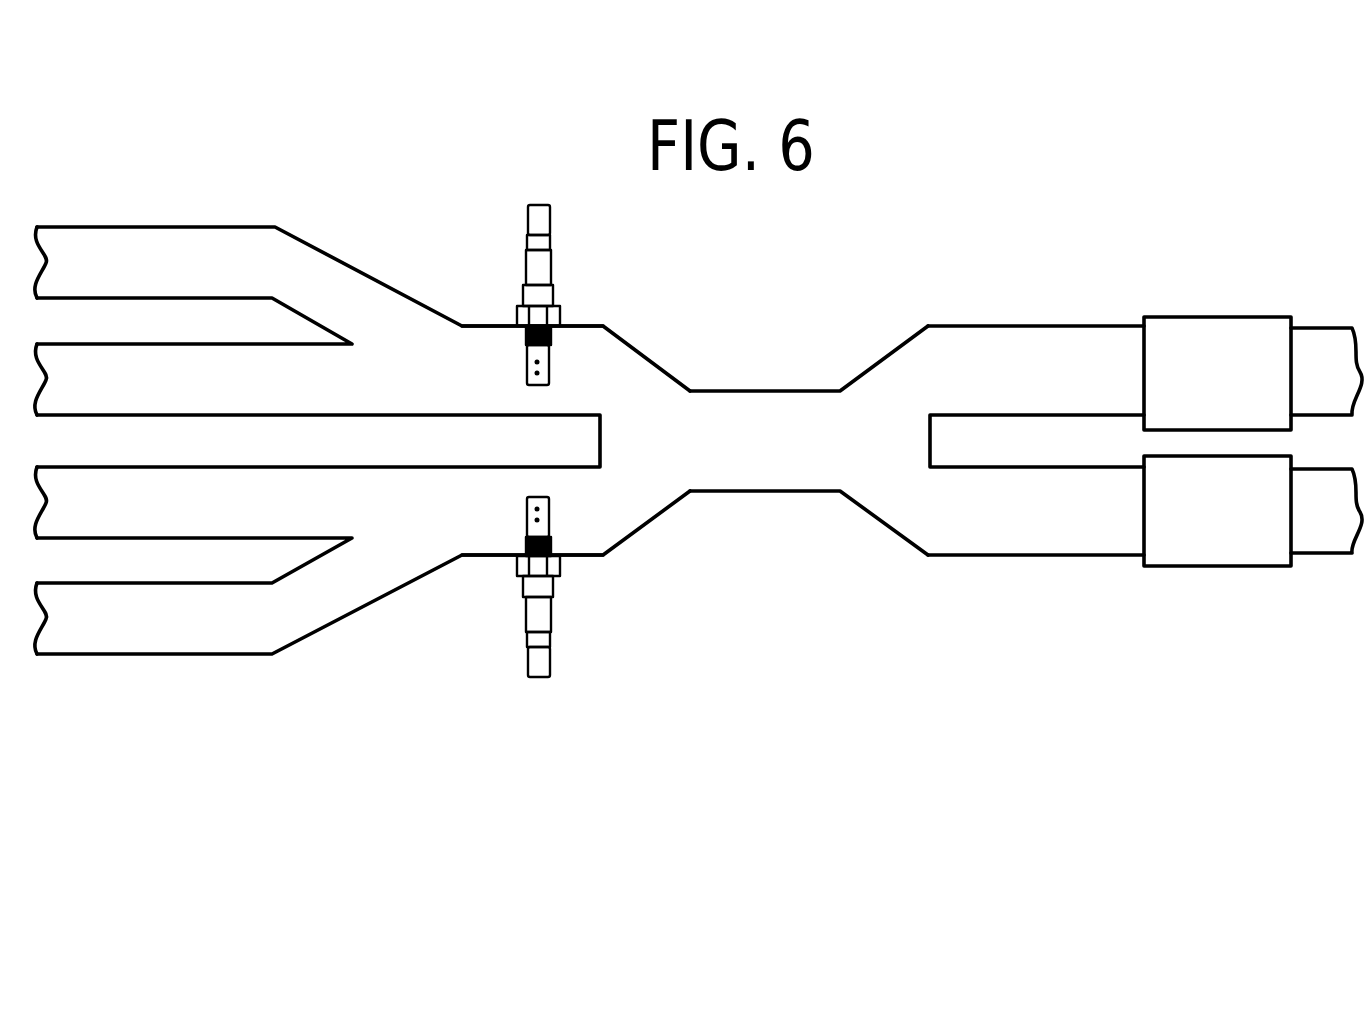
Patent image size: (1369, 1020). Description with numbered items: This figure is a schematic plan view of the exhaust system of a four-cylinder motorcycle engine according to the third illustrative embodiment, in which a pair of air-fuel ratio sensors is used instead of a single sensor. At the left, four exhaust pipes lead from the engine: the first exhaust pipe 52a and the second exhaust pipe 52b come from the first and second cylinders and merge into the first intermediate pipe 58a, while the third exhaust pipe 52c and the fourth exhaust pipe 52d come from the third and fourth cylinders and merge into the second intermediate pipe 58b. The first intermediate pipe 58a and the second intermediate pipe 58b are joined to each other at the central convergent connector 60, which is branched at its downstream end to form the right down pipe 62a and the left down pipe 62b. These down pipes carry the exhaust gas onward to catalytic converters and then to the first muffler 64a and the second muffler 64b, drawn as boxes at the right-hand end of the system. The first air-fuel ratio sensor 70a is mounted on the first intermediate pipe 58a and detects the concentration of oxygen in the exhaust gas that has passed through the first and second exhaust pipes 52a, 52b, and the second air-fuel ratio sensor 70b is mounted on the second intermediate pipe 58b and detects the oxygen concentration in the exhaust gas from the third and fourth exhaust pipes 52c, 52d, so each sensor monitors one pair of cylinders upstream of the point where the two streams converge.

The first exhaust pipe 52a is at (173, 227).
The second exhaust pipe 52b is at (116, 344).
The third exhaust pipe 52c is at (115, 539).
The fourth exhaust pipe 52d is at (172, 654).
The first intermediate pipe 58a is at (487, 325).
The second intermediate pipe 58b is at (487, 556).
The central convergent connector 60 is at (762, 492).
The right down pipe 62a is at (1035, 326).
The left down pipe 62b is at (1035, 556).
The first muffler 64a is at (1175, 328).
The second muffler 64b is at (1173, 552).
The first air-fuel ratio sensor 70a is at (553, 272).
The second air-fuel ratio sensor 70b is at (553, 607).